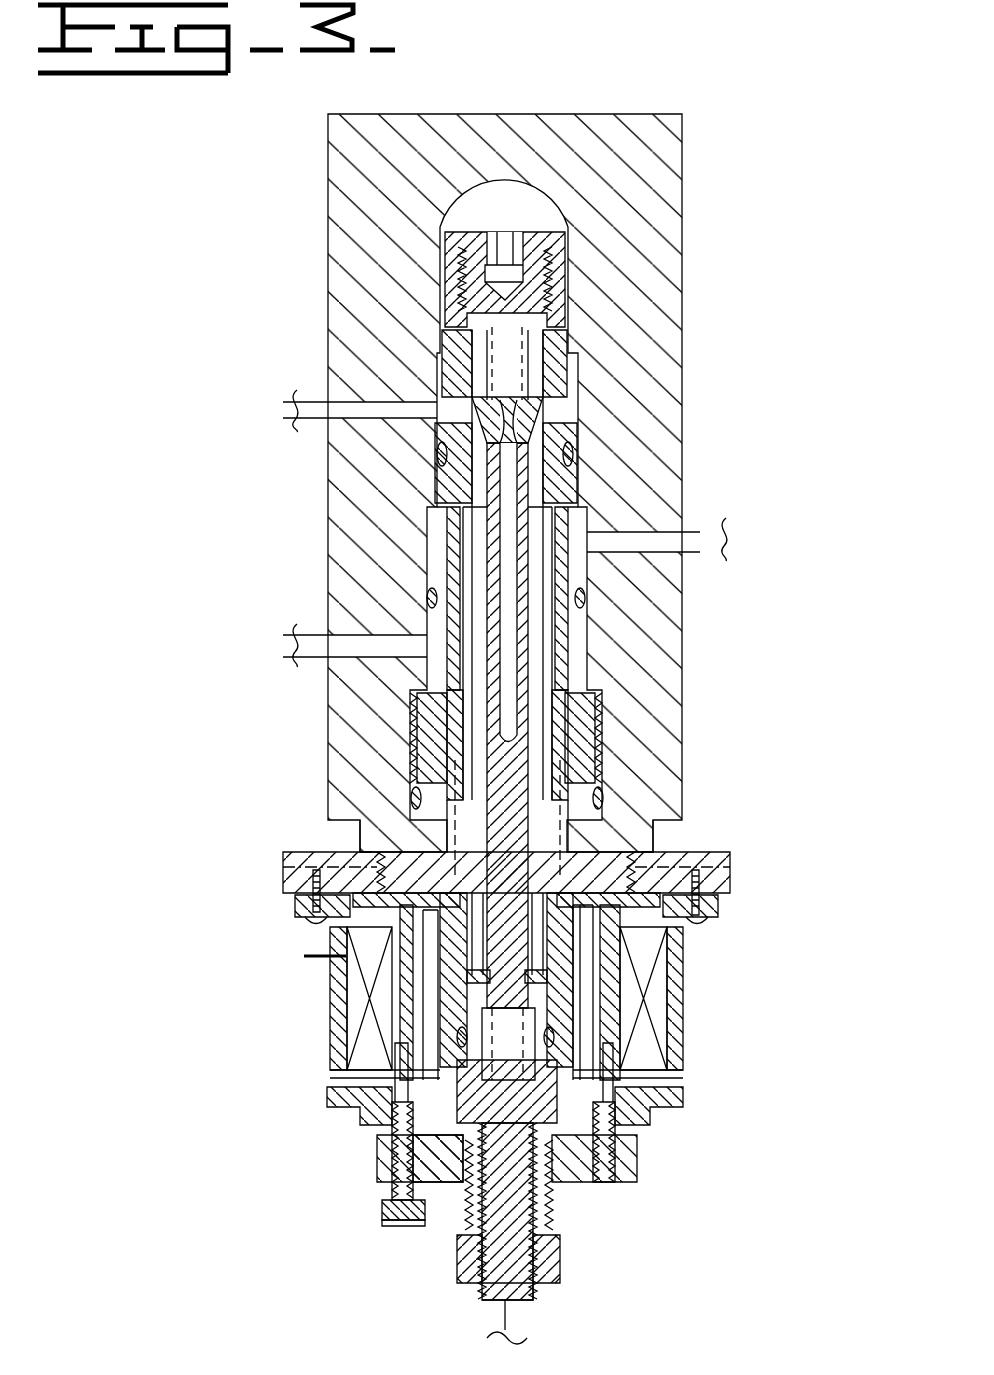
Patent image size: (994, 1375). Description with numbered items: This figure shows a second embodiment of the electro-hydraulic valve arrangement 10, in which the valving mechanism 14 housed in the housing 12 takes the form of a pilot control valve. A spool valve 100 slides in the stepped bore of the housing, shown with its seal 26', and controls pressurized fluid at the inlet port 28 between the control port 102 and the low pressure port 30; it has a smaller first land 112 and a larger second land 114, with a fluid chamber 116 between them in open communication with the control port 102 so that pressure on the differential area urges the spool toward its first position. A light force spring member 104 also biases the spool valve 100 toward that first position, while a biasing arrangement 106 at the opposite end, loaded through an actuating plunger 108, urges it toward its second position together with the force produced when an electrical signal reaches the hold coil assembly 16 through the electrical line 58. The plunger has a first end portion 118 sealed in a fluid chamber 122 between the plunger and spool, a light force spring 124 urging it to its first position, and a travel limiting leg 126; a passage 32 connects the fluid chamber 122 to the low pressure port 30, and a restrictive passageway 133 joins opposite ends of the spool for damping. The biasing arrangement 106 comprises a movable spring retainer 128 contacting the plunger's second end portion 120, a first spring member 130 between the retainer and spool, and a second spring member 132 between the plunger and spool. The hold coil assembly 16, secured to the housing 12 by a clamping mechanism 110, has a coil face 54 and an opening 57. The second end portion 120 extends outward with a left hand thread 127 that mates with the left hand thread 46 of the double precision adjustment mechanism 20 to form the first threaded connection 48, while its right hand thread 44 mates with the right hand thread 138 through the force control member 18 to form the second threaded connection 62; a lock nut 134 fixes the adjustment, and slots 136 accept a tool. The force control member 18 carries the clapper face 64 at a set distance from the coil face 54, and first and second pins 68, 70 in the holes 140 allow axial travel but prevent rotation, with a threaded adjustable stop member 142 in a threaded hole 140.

The electro-hydraulic valve arrangement 10 is at (236, 215).
The housing 12 is at (281, 830).
The valving mechanism 14 is at (255, 605).
The hold coil assembly 16 is at (327, 1029).
The force control member 18 is at (302, 1164).
The double precision adjustment mechanism 20 is at (560, 1142).
The seal ring 26' is at (405, 525).
The inlet port 28 is at (330, 403).
The low pressure port 30 is at (328, 650).
The passage 32 is at (410, 722).
The right hand thread 44 is at (545, 1232).
The left hand thread 46 is at (482, 1290).
The first threaded connection 48 is at (369, 1277).
The coil face 54 is at (330, 1050).
The opening 57 is at (612, 1058).
The electrical line 58 is at (304, 961).
The second threaded connection 62 is at (420, 1164).
The clapper face 64 is at (327, 1087).
The first pin 68 is at (612, 1079).
The second pin 70 is at (347, 984).
The spool valve 100 is at (520, 472).
The control port 102 is at (660, 545).
The light force spring member 104 is at (560, 338).
The biasing arrangement 106 is at (565, 781).
The actuating plunger 108 is at (572, 1125).
The clamping mechanism 110 is at (299, 900).
The first land 112 is at (533, 382).
The second land 114 is at (533, 668).
The fluid chamber 116 is at (540, 622).
The first end portion 118 is at (594, 872).
The second end portion 120 is at (620, 1247).
The fluid chamber 122 is at (360, 832).
The light force spring 124 is at (620, 960).
The travel limiting leg 126 is at (640, 832).
The left hand thread 127 is at (482, 1296).
The movable spring retainer 128 is at (620, 995).
The first spring member 130 is at (284, 868).
The second spring member 132 is at (620, 1012).
The restrictive passageway 133 is at (533, 700).
The lock nut 134 is at (560, 1312).
The slots 136 is at (562, 1255).
The right hand thread 138 is at (470, 1160).
The holes 140 is at (395, 1118).
The threaded adjustable stop member 142 is at (383, 1213).